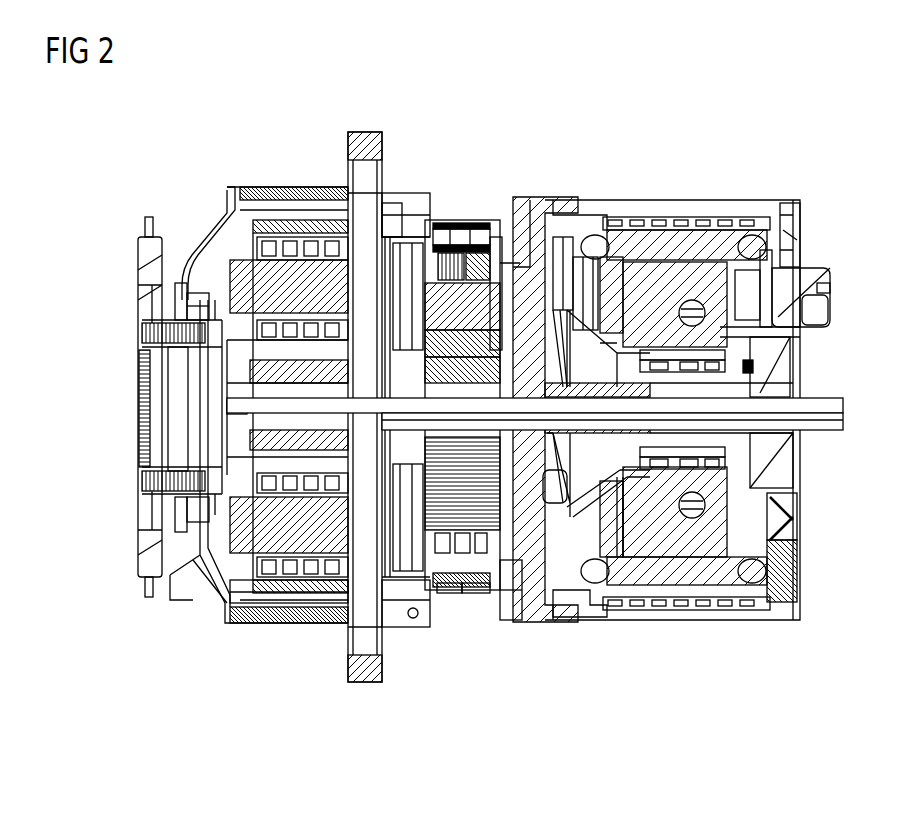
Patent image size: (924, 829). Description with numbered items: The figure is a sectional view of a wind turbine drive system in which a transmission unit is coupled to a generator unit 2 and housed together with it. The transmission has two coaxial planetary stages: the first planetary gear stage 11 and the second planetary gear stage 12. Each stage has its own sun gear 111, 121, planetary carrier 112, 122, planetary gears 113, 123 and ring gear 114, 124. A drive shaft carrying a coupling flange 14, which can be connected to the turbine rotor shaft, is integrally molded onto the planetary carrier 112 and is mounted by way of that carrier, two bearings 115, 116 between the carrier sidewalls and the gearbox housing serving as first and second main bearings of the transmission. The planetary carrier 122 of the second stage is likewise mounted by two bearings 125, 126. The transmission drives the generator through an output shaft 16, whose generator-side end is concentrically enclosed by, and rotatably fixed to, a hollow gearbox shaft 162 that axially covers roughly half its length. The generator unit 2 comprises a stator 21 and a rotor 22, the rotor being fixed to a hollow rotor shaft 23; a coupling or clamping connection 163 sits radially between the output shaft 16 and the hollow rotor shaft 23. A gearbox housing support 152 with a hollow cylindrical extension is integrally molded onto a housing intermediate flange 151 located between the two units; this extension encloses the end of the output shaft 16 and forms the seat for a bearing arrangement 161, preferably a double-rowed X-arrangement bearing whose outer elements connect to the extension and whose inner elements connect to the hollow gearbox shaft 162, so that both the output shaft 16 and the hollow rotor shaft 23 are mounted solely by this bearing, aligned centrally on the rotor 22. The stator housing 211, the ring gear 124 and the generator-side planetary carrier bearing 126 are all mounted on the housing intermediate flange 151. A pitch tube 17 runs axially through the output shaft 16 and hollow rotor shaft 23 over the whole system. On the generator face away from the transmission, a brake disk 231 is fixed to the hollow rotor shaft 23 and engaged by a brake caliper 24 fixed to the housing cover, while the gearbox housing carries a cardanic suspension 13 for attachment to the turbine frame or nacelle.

The generator unit 2 is at (487, 401).
The first planetary gear stage 11 is at (245, 359).
The second planetary gear stage 12 is at (449, 448).
The suspension 13 is at (373, 637).
The coupling flange 14 is at (140, 268).
The output shaft 16 is at (800, 421).
The pitch tube 17 is at (822, 400).
The stator 21 is at (717, 407).
The rotor 22 is at (783, 250).
The hollow rotor shaft 23 is at (795, 478).
The brake caliper 24 is at (797, 283).
The sun gear 111 is at (287, 285).
The planetary carrier 112 is at (232, 255).
The planetary gears 113 is at (278, 590).
The ring gear 114 is at (320, 617).
The bearing 115 is at (190, 285).
The bearing 116 is at (400, 290).
The sun gear 121 is at (470, 393).
The planetary carrier 122 is at (495, 260).
The planetary gears 123 is at (446, 258).
The ring gear 124 is at (470, 592).
The bearing 125 is at (450, 593).
The planetary carrier bearing 126 is at (523, 620).
The housing intermediate flange 151 is at (522, 280).
The gearbox housing support 152 is at (600, 340).
The bearing arrangement 161 is at (708, 270).
The hollow gearbox shaft 162 is at (795, 440).
The coupling or clamping connection 163 is at (795, 458).
The stator housing 211 is at (578, 605).
The brake disk 231 is at (812, 318).